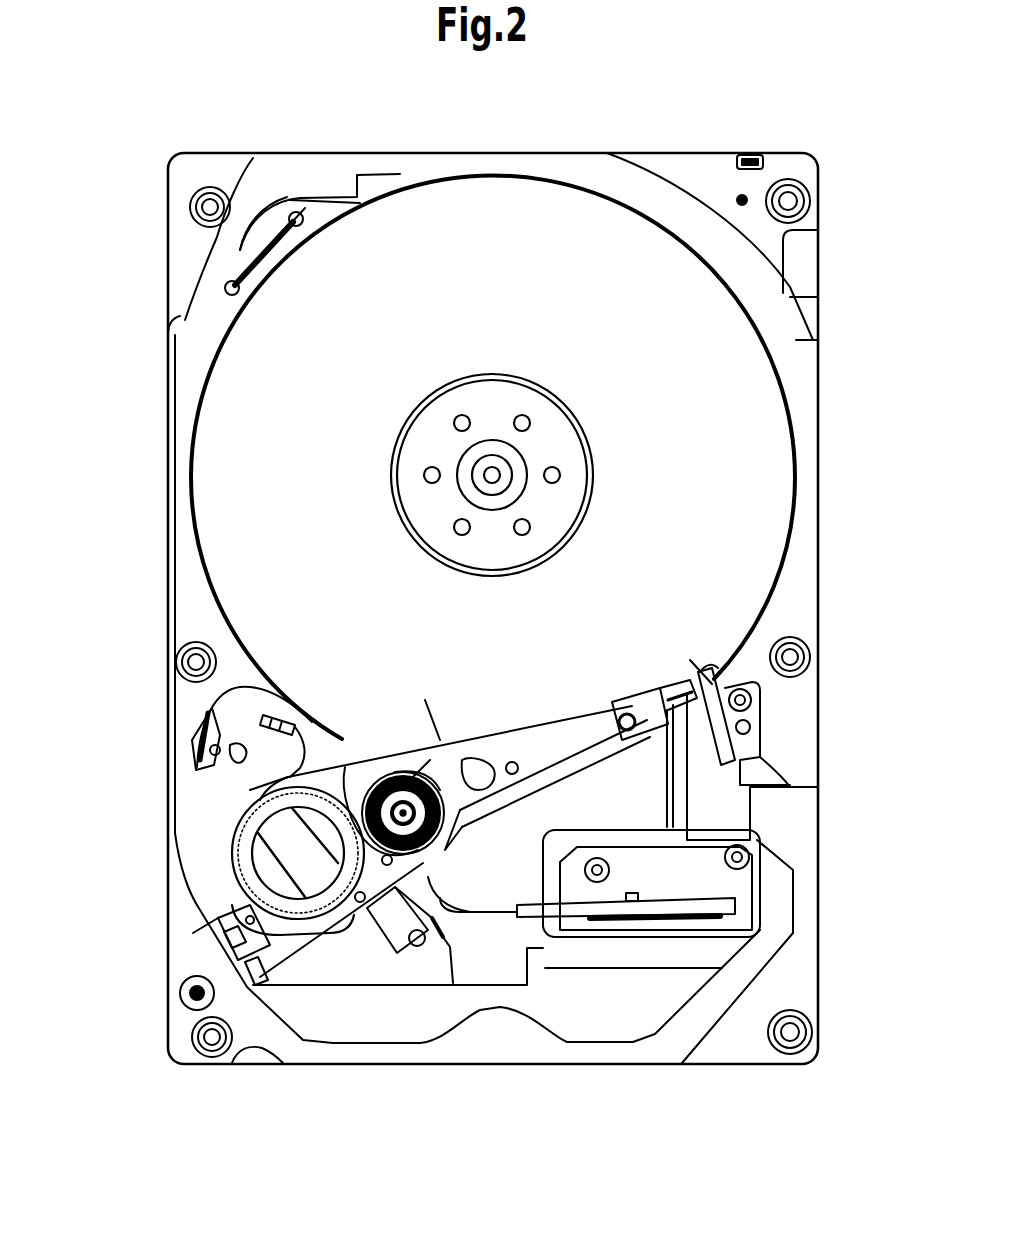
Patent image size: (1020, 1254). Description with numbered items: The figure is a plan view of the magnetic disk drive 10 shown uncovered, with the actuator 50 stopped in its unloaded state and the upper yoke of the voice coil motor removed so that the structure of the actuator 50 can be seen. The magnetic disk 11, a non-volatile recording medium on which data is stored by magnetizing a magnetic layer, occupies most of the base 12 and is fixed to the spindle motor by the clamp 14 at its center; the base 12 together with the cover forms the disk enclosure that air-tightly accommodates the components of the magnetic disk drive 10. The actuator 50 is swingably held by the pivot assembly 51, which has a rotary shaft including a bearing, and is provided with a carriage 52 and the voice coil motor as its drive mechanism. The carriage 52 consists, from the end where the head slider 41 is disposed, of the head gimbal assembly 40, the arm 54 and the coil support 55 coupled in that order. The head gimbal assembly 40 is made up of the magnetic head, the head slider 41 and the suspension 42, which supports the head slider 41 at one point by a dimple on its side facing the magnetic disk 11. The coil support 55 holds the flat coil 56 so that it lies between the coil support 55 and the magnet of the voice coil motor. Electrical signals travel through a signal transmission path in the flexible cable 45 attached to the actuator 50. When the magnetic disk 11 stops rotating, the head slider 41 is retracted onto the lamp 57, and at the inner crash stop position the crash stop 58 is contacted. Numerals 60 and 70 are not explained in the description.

The magnetic disk drive 10 is at (504, 128).
The magnetic disk 11 is at (757, 440).
The base 12 is at (192, 355).
The clamp 14 is at (500, 398).
The head gimbal assembly 40 is at (690, 745).
The head slider 41 is at (697, 680).
The suspension 42 is at (670, 693).
The flexible cable 45 is at (455, 887).
The actuator 50 is at (472, 735).
The pivot assembly 51 is at (395, 780).
The carriage 52 is at (347, 778).
The arm 54 is at (533, 753).
The coil support 55 is at (292, 775).
The flat coil 56 is at (248, 877).
The lamp 57 is at (752, 745).
The crash stop 58 is at (214, 920).
The voice coil 60 is at (363, 940).
The stopper 70 is at (196, 742).